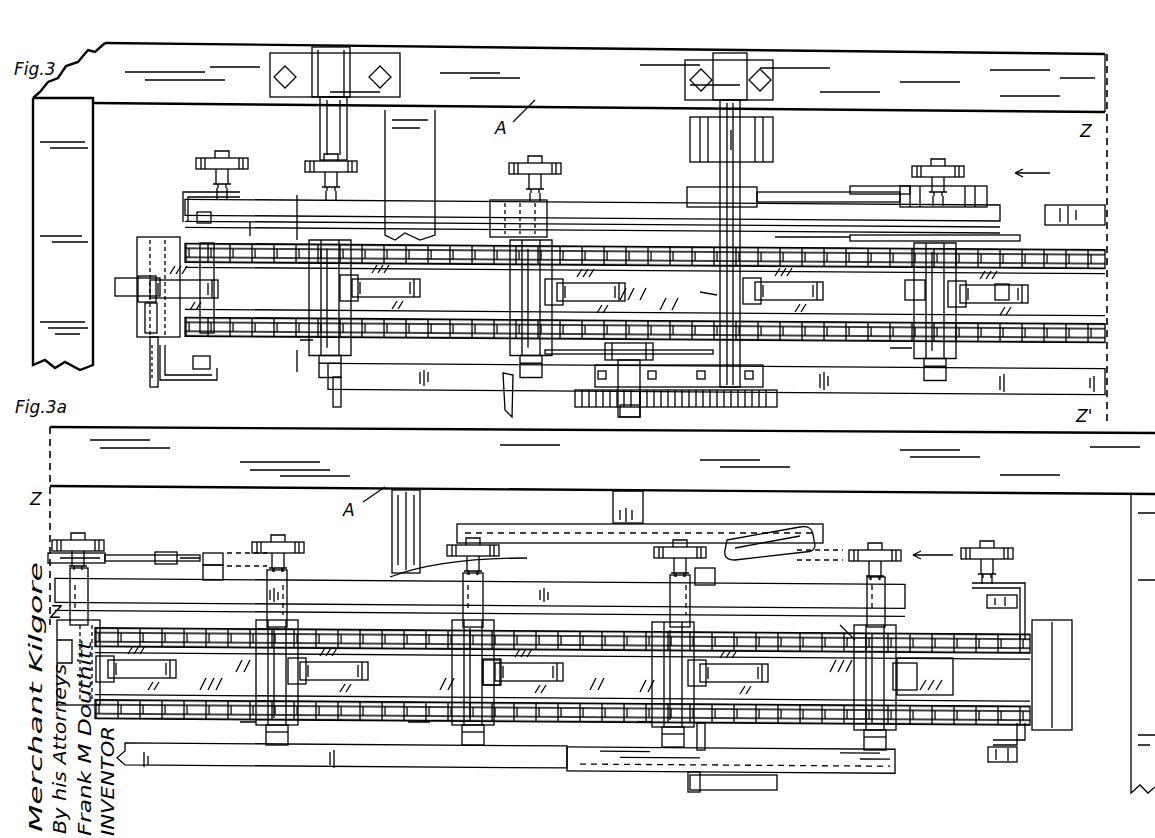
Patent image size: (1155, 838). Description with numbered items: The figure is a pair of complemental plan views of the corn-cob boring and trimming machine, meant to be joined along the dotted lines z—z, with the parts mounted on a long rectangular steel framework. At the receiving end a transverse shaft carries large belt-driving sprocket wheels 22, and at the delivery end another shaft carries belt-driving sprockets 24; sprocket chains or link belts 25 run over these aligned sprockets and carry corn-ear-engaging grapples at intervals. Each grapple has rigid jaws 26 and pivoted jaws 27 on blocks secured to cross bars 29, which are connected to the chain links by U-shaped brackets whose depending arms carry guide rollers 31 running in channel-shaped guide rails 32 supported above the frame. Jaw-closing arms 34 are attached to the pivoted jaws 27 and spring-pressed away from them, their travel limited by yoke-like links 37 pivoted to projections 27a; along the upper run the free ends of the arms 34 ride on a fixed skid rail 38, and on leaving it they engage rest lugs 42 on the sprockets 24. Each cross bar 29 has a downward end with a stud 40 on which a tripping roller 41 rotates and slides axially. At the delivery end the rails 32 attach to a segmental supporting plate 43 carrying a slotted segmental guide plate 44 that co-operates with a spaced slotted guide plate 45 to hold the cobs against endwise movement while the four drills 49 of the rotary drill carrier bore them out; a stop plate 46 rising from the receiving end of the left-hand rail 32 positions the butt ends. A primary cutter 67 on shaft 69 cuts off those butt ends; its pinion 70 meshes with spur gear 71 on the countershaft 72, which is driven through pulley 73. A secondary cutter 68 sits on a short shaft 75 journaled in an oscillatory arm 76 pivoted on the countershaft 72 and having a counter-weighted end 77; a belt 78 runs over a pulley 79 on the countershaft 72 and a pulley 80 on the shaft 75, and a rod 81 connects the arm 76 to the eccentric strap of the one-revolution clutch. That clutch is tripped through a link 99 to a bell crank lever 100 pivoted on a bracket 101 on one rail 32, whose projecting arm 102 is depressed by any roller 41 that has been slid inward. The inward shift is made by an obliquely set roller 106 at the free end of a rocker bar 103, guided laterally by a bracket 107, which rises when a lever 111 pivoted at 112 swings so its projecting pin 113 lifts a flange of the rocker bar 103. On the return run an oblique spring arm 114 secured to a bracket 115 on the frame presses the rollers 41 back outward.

In FIG. 3A, the belt-driving sprocket wheels 22 is at (1000, 662).
In FIG. 3, the belt-driving sprockets 24 is at (263, 320).
In FIG. 3, the sprocket chains or link belts 25 is at (458, 312).
In FIG. 3A, the sprocket chains or link belts 25 is at (967, 662).
In FIG. 3, the jaws 26 is at (716, 295).
In FIG. 3A, the jaws 26 is at (1072, 668).
In FIG. 3, the jaws 27 is at (137, 252).
In FIG. 3A, the jaws 27 is at (100, 621).
In FIG. 3, the projections 27a is at (130, 288).
In FIG. 3, the cross bars 29 is at (183, 207).
In FIG. 3A, the cross bars 29 is at (290, 613).
In FIG. 3, the guide rollers 31 is at (212, 217).
In FIG. 3A, the guide rollers 31 is at (987, 603).
In FIG. 3, the guide rails 32 is at (464, 200).
In FIG. 3A, the guide rails 32 is at (337, 592).
In FIG. 3, the jaw-closing arms 34 is at (215, 295).
In FIG. 3A, the jaw-closing arms 34 is at (168, 669).
In FIG. 3, the yoke-like links 37 is at (143, 310).
In FIG. 3A, the yoke-like links 37 is at (509, 665).
In FIG. 3, the skid or fixed rail 38 is at (649, 297).
In FIG. 3A, the skid or fixed rail 38 is at (526, 676).
In FIG. 3, the studs 40 is at (222, 151).
In FIG. 3A, the studs 40 is at (280, 540).
In FIG. 3, the tripping rollers 41 is at (196, 167).
In FIG. 3A, the tripping rollers 41 is at (306, 548).
In FIG. 3, the rest lugs or bars 42 is at (214, 276).
In FIG. 3, the segmental supporting plate 43 is at (292, 190).
In FIG. 3, the slotted segmental guide plate 44 is at (190, 386).
In FIG. 3, the slotted segmental guide plate or strip 45 is at (255, 230).
In FIG. 3A, the guide or stop plate 46 is at (648, 770).
In FIG. 3, the drills 49 is at (148, 366).
In FIG. 3, the primary knife or cutter 67 is at (578, 357).
In FIG. 3, the secondary knife or cutter 68 is at (1025, 240).
In FIG. 3, the shaft 69 is at (643, 414).
In FIG. 3, the pinion 70 is at (605, 397).
In FIG. 3, the spur gear 71 is at (780, 405).
In FIG. 3, the transverse countershaft 72 is at (740, 181).
In FIG. 3, the pulley 73 is at (690, 155).
In FIG. 3, the short shaft 75 is at (850, 240).
In FIG. 3, the supporting oscillatory arm 76 is at (626, 222).
In FIG. 3, the counter-weighted end 77 is at (548, 213).
In FIG. 3, the belt 78 is at (861, 196).
In FIG. 3, the pulley 79 is at (783, 190).
In FIG. 3, the pulley 80 is at (972, 191).
In FIG. 3, the rod 81 is at (1047, 210).
In FIG. 3A, the link 99 is at (90, 546).
In FIG. 3A, the bell crank lever 100 is at (207, 552).
In FIG. 3A, the bracket 101 is at (215, 582).
In FIG. 3A, the projecting arm 102 is at (150, 555).
In FIG. 3A, the rocker bar 103 is at (706, 528).
In FIG. 3A, the obliquely set roller 106 is at (786, 540).
In FIG. 3A, the bracket 107 is at (645, 506).
In FIG. 3A, the lever 111 is at (768, 788).
In FIG. 3A, the pivot 112 is at (707, 734).
In FIG. 3A, the projecting pin 113 is at (716, 575).
In FIG. 3A, the oblique spring arm 114 is at (527, 559).
In FIG. 3A, the bracket 115 is at (420, 516).